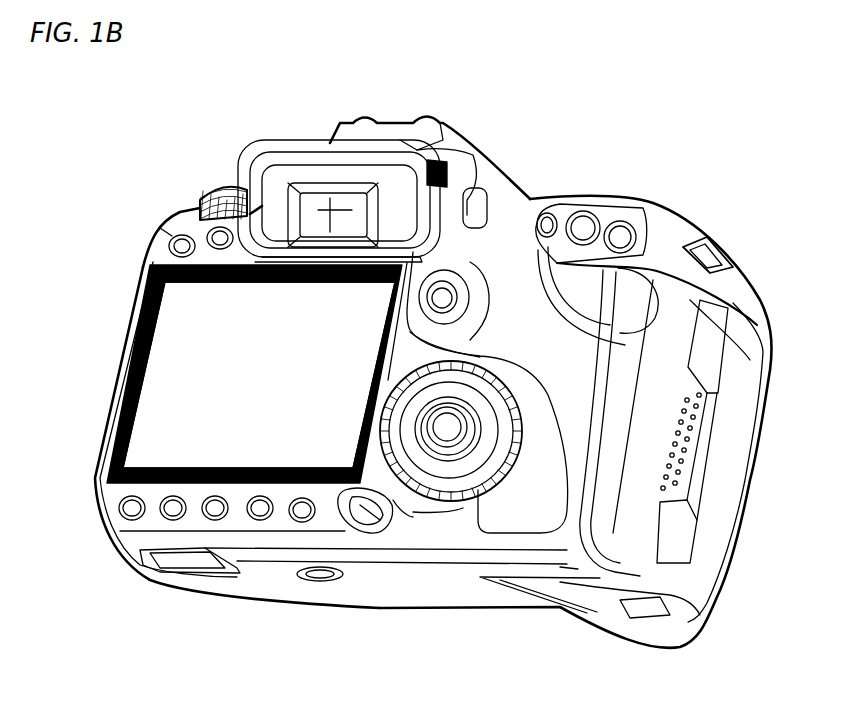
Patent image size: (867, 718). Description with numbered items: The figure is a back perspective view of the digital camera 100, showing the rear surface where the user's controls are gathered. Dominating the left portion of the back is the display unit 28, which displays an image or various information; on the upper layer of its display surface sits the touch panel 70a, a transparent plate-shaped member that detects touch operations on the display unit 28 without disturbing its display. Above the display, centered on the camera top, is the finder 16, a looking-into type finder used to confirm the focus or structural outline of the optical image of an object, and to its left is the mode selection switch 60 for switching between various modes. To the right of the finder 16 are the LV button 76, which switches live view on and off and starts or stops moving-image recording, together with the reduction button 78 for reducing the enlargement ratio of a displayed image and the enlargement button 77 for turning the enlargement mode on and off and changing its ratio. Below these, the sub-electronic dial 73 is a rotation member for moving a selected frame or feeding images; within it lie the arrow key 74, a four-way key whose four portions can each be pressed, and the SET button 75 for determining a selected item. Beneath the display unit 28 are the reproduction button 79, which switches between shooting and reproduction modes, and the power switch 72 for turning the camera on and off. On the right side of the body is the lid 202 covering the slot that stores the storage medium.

The digital camera 100 is at (796, 153).
The finder 16 is at (338, 227).
The mode selection switch 60 is at (220, 182).
The display unit 28 is at (221, 373).
The touch panel 70a is at (177, 347).
The LV button 76 is at (444, 292).
The reduction button 78 is at (575, 225).
The enlargement button 77 is at (620, 230).
The lid 202 is at (653, 407).
The reproduction button 79 is at (302, 510).
The power switch 72 is at (367, 525).
The sub-electronic dial 73 is at (413, 500).
The arrow key 74 is at (433, 457).
The SET button 75 is at (448, 417).